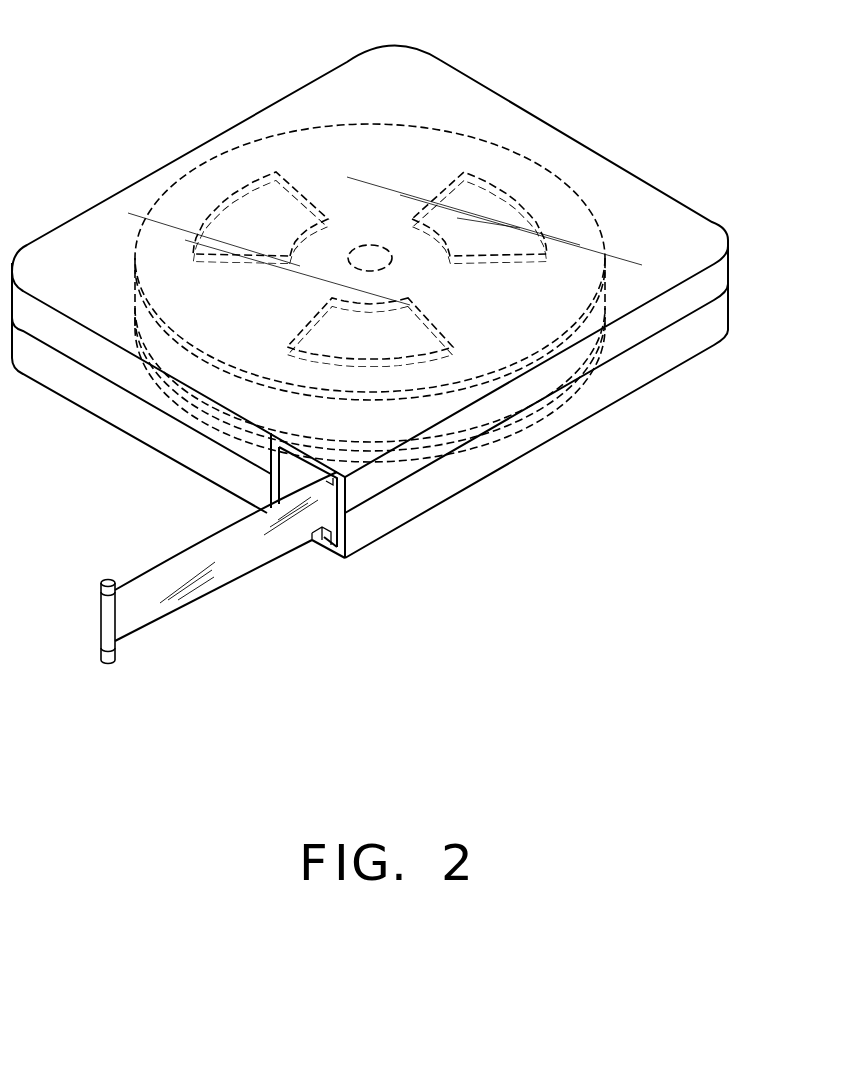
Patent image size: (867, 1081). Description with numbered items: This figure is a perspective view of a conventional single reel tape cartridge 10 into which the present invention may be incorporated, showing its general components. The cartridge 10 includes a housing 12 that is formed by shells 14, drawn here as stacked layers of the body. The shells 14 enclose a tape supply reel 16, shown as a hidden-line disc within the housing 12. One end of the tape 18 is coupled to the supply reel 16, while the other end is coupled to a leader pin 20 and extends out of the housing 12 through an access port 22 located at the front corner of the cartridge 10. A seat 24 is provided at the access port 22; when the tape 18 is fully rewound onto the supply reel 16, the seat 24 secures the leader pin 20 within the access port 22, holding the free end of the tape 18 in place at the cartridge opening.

The single reel tape cartridge 10 is at (178, 64).
The housing 12 is at (78, 227).
The shells 14 is at (726, 271).
The tape supply reel 16 is at (393, 152).
The tape 18 is at (197, 590).
The leader pin 20 is at (102, 627).
The access port 22 is at (288, 478).
The seat 24 is at (320, 551).